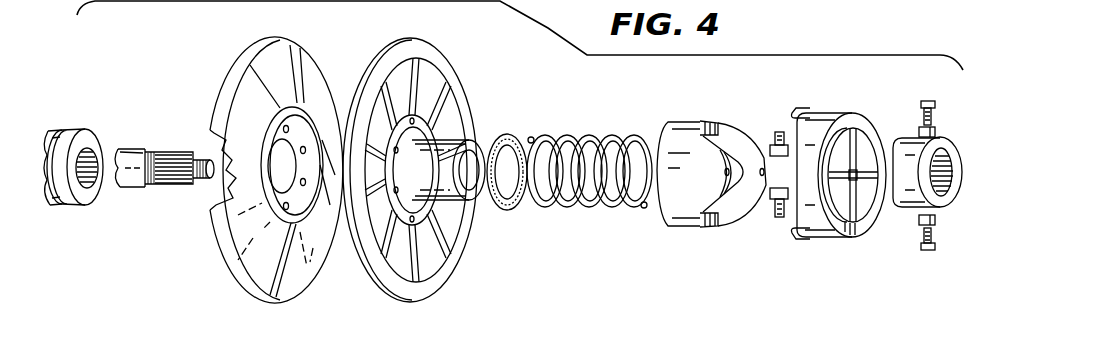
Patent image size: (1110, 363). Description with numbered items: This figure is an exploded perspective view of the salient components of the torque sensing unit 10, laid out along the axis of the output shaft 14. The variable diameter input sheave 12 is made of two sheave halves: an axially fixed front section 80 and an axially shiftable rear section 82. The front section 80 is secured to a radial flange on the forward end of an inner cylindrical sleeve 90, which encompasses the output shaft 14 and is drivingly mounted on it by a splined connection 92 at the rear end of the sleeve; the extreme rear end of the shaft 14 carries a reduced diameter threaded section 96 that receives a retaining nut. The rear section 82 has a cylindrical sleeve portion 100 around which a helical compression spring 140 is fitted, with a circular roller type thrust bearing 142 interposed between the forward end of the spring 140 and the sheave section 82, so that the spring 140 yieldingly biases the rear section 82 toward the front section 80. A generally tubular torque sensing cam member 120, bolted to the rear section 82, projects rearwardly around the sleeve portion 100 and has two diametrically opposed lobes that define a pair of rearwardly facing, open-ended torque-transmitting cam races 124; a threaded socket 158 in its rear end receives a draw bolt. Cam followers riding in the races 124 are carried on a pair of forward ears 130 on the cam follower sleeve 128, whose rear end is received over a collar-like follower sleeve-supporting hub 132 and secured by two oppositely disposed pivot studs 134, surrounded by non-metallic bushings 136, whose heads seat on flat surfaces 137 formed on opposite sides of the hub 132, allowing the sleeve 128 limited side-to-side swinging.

The torque sensing unit 10 is at (548, 29).
The variable diameter input sheave 12 is at (312, 46).
The output shaft 14 is at (129, 150).
The front section 80 is at (268, 38).
The rear section 82 is at (438, 45).
The inner cylindrical sleeve 90 is at (58, 132).
The splined connection 92 is at (181, 150).
The reduced diameter threaded section 96 is at (206, 186).
The sleeve portion 100 is at (447, 147).
The torque sensing cam member 120 is at (699, 175).
The cam races 124 is at (720, 123).
The cam follower sleeve 128 is at (845, 171).
The ears 130 is at (803, 108).
The follower sleeve-supporting hub 132 is at (929, 186).
The pivot studs 134 is at (930, 101).
The non-metallic bushings 136 is at (936, 130).
The flat surfaces 137 is at (946, 136).
The helical compression spring 140 is at (581, 135).
The thrust bearing 142 is at (512, 210).
The socket 158 is at (724, 180).